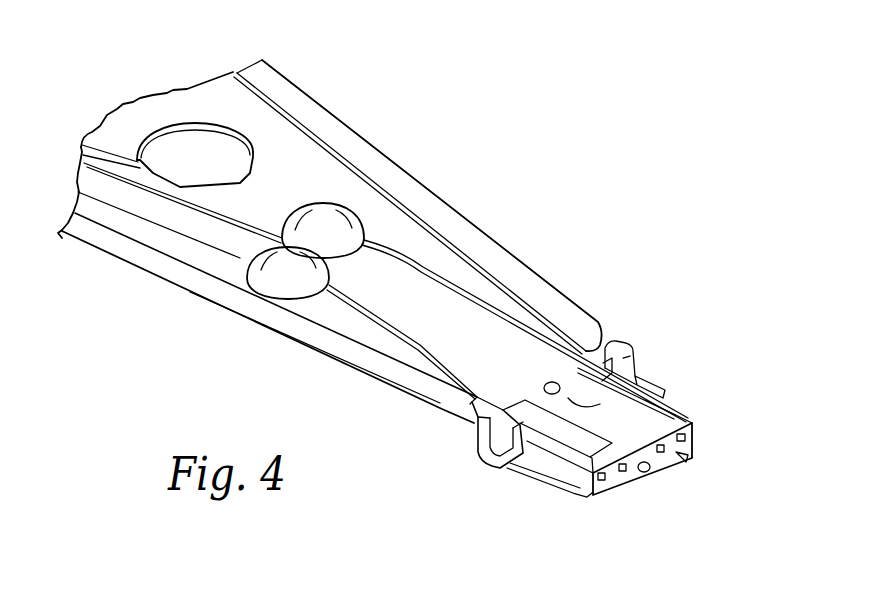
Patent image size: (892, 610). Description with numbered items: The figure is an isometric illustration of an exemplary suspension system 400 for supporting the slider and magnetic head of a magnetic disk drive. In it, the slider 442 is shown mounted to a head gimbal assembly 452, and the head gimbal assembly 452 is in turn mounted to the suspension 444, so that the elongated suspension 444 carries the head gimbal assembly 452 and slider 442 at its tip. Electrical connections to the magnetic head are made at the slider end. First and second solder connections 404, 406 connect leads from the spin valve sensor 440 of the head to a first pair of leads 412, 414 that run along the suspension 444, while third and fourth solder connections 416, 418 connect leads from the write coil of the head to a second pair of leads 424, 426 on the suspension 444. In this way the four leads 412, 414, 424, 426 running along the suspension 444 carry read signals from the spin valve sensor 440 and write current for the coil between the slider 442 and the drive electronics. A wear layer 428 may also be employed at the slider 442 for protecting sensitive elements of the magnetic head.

The suspension system 400 is at (486, 97).
The suspension 444 is at (474, 207).
The lead 426 is at (503, 308).
The head gimbal assembly 452 is at (575, 405).
The lead 424 is at (451, 283).
The lead 414 is at (364, 325).
The lead 412 is at (362, 322).
The slider 442 is at (522, 485).
The wear layer 428 is at (556, 491).
The first solder connection 404 is at (604, 483).
The second solder connection 406 is at (622, 473).
The spin valve sensor 440 is at (647, 473).
The third solder connection 416 is at (664, 453).
The fourth solder connection 418 is at (690, 437).